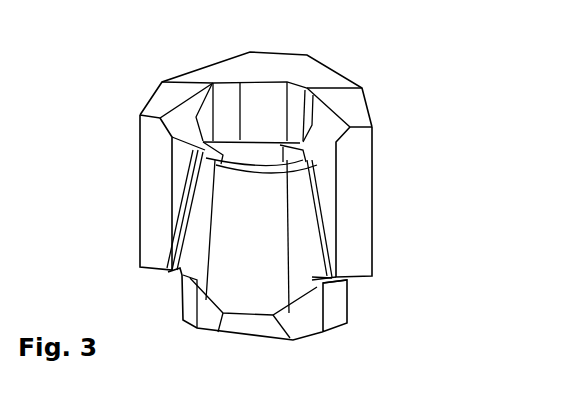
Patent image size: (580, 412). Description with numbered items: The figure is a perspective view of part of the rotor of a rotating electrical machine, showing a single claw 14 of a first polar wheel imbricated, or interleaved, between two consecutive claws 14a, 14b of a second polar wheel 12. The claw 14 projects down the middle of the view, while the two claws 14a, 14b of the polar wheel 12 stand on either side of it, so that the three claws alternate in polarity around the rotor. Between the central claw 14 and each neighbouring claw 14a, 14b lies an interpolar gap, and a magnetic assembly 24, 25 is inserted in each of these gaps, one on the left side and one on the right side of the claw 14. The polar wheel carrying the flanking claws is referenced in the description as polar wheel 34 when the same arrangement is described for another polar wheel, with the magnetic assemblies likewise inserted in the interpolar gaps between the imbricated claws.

The polar wheel 12 is at (262, 195).
The claw 14 is at (247, 292).
The claw 14a is at (158, 157).
The claw 14b is at (357, 162).
The magnetic assembly 24 is at (192, 233).
The magnetic assembly 25 is at (312, 216).
The polar wheel 34 is at (302, 77).